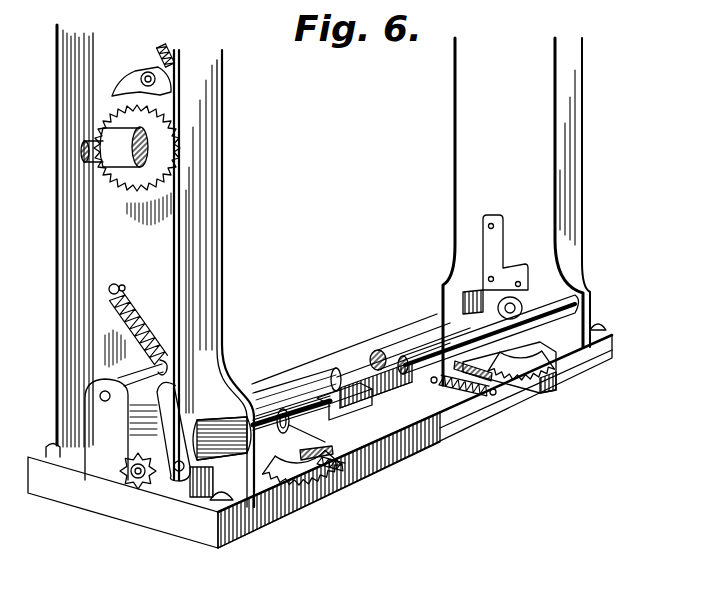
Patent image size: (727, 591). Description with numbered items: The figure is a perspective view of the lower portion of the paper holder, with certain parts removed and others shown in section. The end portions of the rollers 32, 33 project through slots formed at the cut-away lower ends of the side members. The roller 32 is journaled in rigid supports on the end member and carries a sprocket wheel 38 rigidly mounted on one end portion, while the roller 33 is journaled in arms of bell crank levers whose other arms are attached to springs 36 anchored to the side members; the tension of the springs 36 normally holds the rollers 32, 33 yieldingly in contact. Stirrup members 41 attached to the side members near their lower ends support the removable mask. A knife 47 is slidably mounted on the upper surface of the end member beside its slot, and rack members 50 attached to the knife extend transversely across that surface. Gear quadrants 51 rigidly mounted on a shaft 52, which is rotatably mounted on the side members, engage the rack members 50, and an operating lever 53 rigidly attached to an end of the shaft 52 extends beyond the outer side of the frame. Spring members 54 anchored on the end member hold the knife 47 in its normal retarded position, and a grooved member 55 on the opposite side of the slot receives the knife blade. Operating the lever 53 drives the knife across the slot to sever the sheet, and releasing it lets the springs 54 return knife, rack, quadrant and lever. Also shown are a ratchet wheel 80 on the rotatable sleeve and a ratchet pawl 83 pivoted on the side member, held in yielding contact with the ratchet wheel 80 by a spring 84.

The roller 32 is at (450, 313).
The roller 33 is at (432, 343).
The spring 36 is at (141, 310).
The sprocket wheel 38 is at (127, 458).
The stirrup member 41 is at (497, 252).
The knife 47 is at (407, 402).
The rack member 50 is at (305, 480).
The gear quadrant 51 is at (320, 476).
The shaft 52 is at (335, 373).
The operating lever 53 is at (175, 448).
The spring member 54 is at (345, 458).
The grooved member 55 is at (362, 364).
The ratchet wheel 80 is at (133, 201).
The ratchet pawl 83 is at (137, 76).
The spring 84 is at (169, 44).